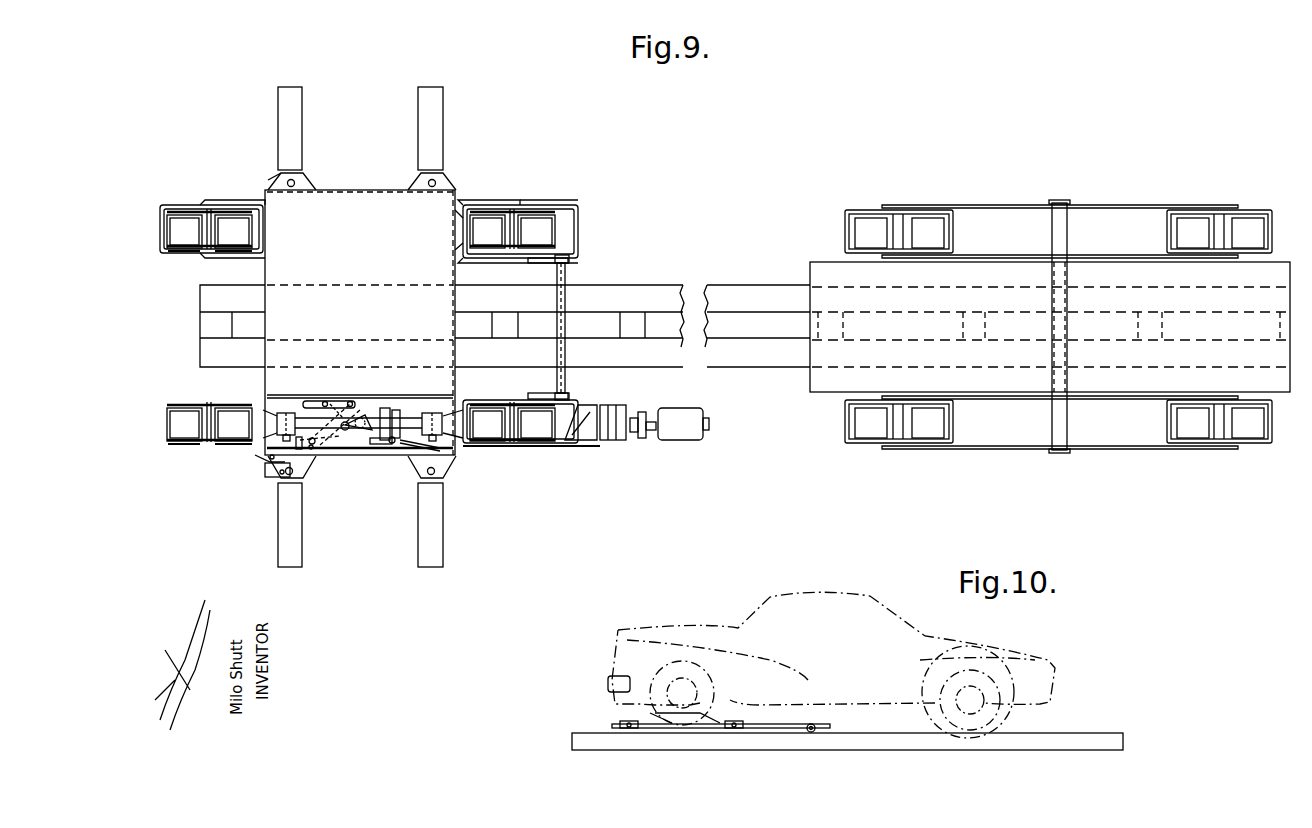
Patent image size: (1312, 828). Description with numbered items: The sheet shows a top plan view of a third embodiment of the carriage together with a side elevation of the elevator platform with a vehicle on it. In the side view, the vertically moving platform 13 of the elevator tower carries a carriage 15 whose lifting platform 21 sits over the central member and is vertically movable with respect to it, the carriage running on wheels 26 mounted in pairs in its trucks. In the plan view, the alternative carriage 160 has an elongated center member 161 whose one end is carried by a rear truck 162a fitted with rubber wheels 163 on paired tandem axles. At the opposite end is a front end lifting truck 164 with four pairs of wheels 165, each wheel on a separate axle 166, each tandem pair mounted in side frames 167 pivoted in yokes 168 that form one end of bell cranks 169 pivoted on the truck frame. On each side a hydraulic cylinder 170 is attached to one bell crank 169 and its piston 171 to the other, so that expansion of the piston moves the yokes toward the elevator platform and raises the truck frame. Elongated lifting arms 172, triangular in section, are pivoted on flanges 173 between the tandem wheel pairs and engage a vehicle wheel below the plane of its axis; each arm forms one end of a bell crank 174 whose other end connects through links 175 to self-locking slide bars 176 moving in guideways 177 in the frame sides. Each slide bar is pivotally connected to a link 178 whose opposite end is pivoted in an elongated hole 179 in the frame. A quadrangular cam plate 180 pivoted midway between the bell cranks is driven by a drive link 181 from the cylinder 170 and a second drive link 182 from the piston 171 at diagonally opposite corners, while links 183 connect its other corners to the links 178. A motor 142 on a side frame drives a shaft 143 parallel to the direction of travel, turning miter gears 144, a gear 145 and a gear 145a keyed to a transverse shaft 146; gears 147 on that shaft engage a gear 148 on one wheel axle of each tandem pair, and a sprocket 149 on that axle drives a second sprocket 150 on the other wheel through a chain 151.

In FIG. 10, the platform 13 is at (1042, 740).
In FIG. 10, the carriage 15 is at (812, 722).
In FIG. 10, the lifting platform 21 is at (648, 714).
In FIG. 10, the wheels 26 is at (620, 723).
In FIG. 9, the motor 142 is at (678, 415).
In FIG. 9, the shaft 143 is at (637, 434).
In FIG. 9, the miter gears 144 is at (582, 407).
In FIG. 9, the gear 145 is at (596, 442).
In FIG. 9, the gear 145a is at (565, 448).
In FIG. 9, the transverse shaft 146 is at (565, 327).
In FIG. 9, the gears 147 is at (570, 262).
In FIG. 9, the gear 148 is at (540, 263).
In FIG. 9, the sprocket 149 is at (540, 210).
In FIG. 9, the second sprocket 150 is at (505, 186).
In FIG. 9, the chain 151 is at (528, 212).
In FIG. 9, the carriage 160 is at (378, 266).
In FIG. 9, the center member 161 is at (718, 290).
In FIG. 9, the rear truck 162a is at (1138, 306).
In FIG. 9, the rubber wheels 163 is at (925, 224).
In FIG. 9, the front end lifting truck 164 is at (376, 172).
In FIG. 9, the wheels 165 is at (198, 226).
In FIG. 9, the axle 166 is at (232, 252).
In FIG. 9, the side frames 167 is at (178, 210).
In FIG. 9, the yokes 168 is at (242, 200).
In FIG. 9, the bell cranks 169 is at (290, 412).
In FIG. 9, the hydraulic cylinder 170 is at (352, 420).
In FIG. 9, the piston 171 is at (430, 412).
In FIG. 9, the lifting arms 172 is at (428, 97).
In FIG. 9, the flanges 173 is at (418, 178).
In FIG. 9, the bell crank 174 is at (282, 478).
In FIG. 9, the links 175 is at (268, 463).
In FIG. 9, the slide bars 176 is at (415, 454).
In FIG. 9, the guideways 177 is at (295, 450).
In FIG. 9, the link 178 is at (400, 415).
In FIG. 9, the elongated hole 179 is at (366, 415).
In FIG. 9, the cam plate 180 is at (385, 410).
In FIG. 9, the drive link 181 is at (343, 400).
In FIG. 9, the second drive link 182 is at (395, 446).
In FIG. 9, the links 183 is at (322, 438).